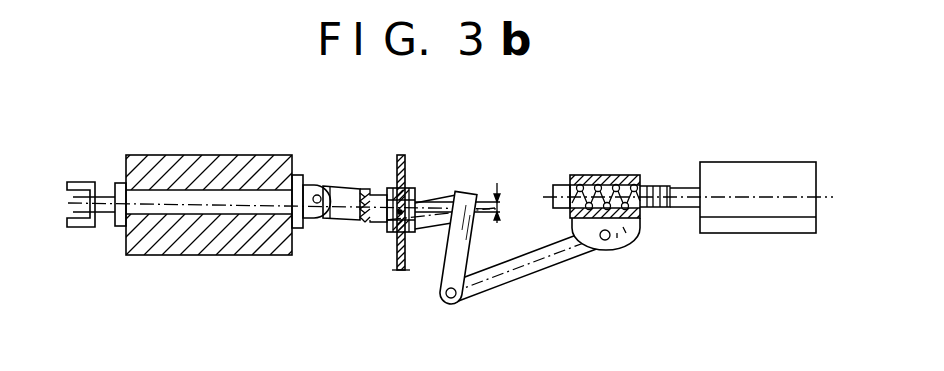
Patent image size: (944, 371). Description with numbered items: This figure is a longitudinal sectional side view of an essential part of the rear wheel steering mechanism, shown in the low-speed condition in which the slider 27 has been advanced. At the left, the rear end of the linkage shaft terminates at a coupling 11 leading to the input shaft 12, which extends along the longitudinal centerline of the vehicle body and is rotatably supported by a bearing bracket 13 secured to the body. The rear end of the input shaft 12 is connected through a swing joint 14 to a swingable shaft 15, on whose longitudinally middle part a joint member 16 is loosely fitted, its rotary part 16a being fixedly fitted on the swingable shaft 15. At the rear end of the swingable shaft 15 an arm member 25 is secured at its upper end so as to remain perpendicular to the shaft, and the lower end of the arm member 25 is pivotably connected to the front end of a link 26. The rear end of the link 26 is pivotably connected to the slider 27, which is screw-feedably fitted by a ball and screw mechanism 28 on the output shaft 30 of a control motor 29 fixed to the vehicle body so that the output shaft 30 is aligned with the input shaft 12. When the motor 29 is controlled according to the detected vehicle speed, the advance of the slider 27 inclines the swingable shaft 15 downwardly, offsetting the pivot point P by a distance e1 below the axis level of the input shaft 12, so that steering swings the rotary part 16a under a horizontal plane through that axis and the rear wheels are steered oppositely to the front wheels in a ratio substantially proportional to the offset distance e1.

The fork coupling 11 is at (90, 181).
The input shaft 12 is at (168, 190).
The bearing bracket 13 is at (223, 155).
The swing joint 14 is at (321, 175).
The swingable shaft 15 is at (437, 235).
The joint member 16 is at (405, 163).
The rotary part 16a is at (408, 188).
The pivot point P is at (390, 235).
The offset distance e1 is at (498, 187).
The arm member 25 is at (470, 250).
The link 26 is at (530, 273).
The slider 27 is at (615, 175).
The ball and screw mechanism 28 is at (570, 183).
The control motor 29 is at (733, 162).
The output shaft 30 is at (657, 210).